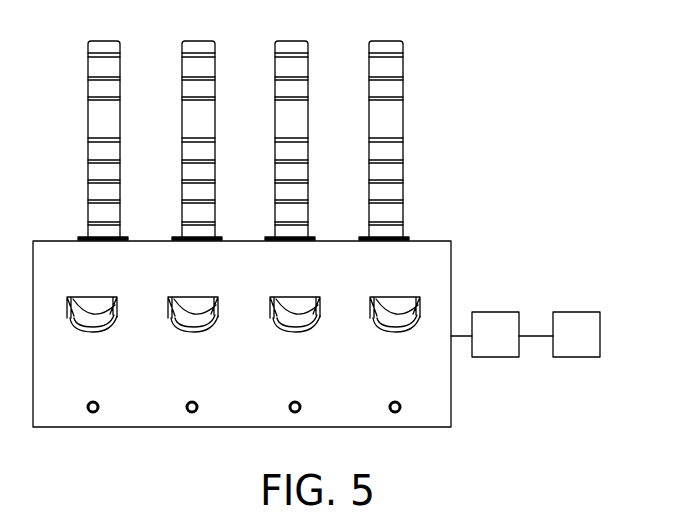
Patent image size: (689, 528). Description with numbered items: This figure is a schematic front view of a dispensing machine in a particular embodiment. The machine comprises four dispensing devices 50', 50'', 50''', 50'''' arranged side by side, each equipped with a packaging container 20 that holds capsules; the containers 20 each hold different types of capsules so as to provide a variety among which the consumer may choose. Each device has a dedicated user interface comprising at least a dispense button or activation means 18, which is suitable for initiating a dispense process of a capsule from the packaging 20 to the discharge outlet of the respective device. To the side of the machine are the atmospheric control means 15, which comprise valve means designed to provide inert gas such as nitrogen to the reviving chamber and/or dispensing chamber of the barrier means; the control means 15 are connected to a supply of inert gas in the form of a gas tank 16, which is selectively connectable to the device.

The packaging container 20 is at (88, 50).
The dispensing device 50' is at (73, 266).
The dispensing device 50'' is at (171, 266).
The dispensing device 50''' is at (269, 266).
The dispensing device 50'''' is at (369, 266).
The dispense button or activation means 18 is at (93, 410).
The atmospheric control means 15 is at (498, 346).
The gas tank 16 is at (580, 346).